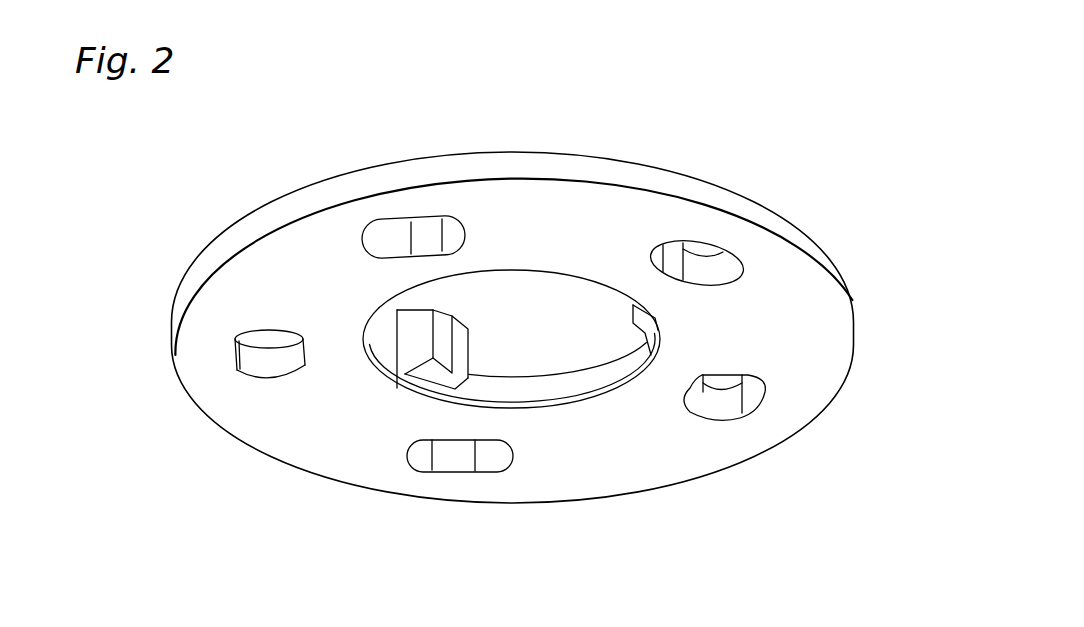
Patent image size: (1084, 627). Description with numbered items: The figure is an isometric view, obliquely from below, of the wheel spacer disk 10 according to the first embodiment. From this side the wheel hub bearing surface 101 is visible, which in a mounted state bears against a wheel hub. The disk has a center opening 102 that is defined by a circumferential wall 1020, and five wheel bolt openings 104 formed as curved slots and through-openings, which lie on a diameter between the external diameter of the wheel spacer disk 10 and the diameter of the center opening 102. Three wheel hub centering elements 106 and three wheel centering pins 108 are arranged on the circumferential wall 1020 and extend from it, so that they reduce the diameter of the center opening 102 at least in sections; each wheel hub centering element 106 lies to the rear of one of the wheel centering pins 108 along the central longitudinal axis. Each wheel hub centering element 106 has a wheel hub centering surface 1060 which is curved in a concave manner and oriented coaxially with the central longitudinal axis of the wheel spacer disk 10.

The wheel spacer disk 10 is at (769, 170).
The wheel hub bearing surface 101 is at (215, 322).
The center opening 102 is at (568, 382).
The circumferential wall 1020 is at (538, 388).
The wheel bolt openings 104 is at (268, 364).
The wheel hub centering elements 106 is at (403, 409).
The wheel hub centering surface 1060 is at (436, 389).
The wheel centering pins 108 is at (608, 331).